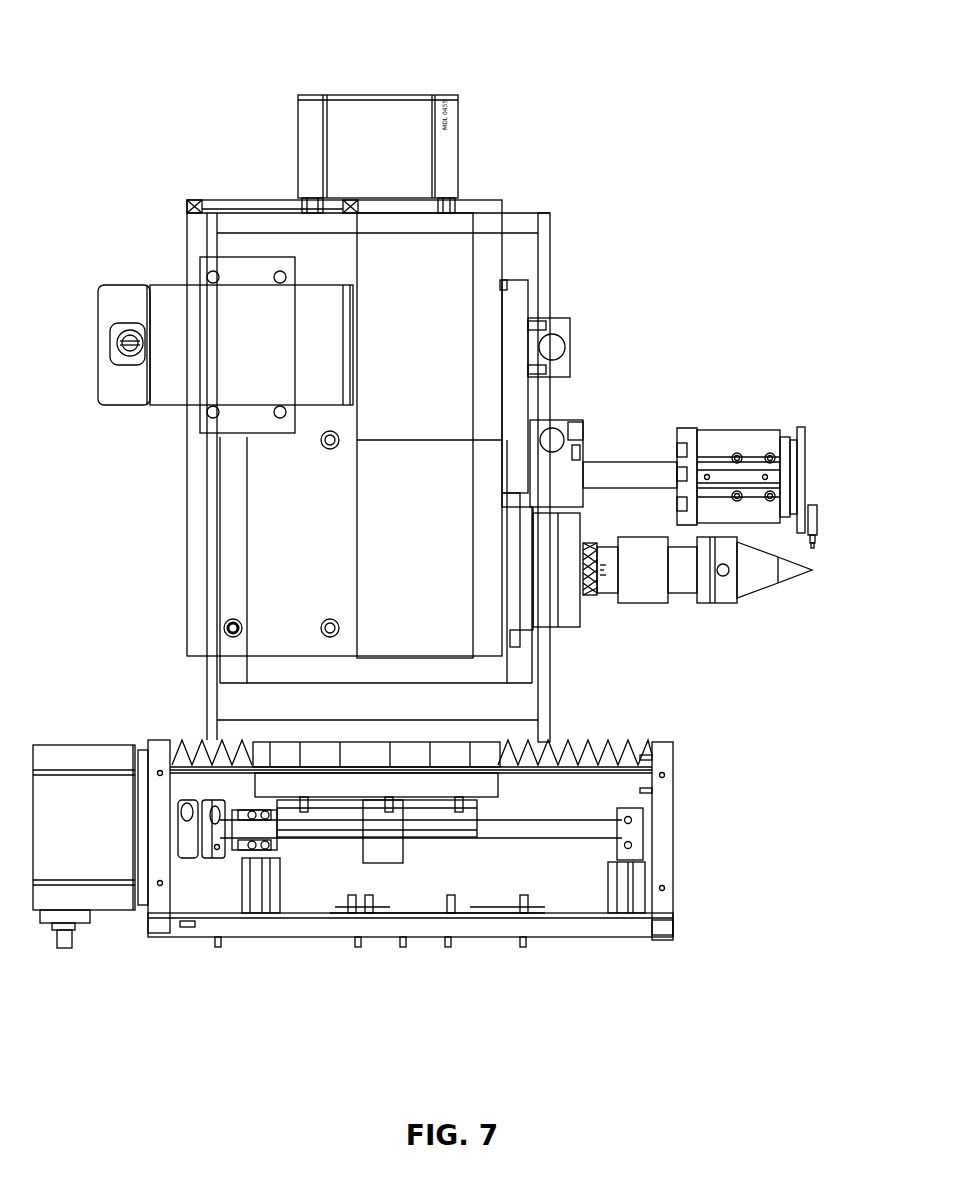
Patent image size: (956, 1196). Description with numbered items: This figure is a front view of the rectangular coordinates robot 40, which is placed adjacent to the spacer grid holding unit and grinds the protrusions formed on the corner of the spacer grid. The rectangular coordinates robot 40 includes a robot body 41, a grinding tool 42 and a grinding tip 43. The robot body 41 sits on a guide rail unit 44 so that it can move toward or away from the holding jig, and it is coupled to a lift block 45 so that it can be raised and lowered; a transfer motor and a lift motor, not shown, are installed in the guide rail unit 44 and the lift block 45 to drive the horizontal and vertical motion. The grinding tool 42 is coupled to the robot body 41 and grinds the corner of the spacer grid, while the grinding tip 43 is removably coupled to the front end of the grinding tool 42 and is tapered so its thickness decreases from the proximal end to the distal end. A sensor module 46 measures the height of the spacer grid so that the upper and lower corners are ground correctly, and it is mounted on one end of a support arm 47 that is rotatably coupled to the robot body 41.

The rectangular coordinates robot 40 is at (228, 166).
The robot body 41 is at (403, 548).
The grinding tool 42 is at (683, 583).
The grinding tip 43 is at (788, 572).
The guide rail unit 44 is at (553, 925).
The lift block 45 is at (272, 462).
The sensor module 46 is at (752, 430).
The support arm 47 is at (557, 400).